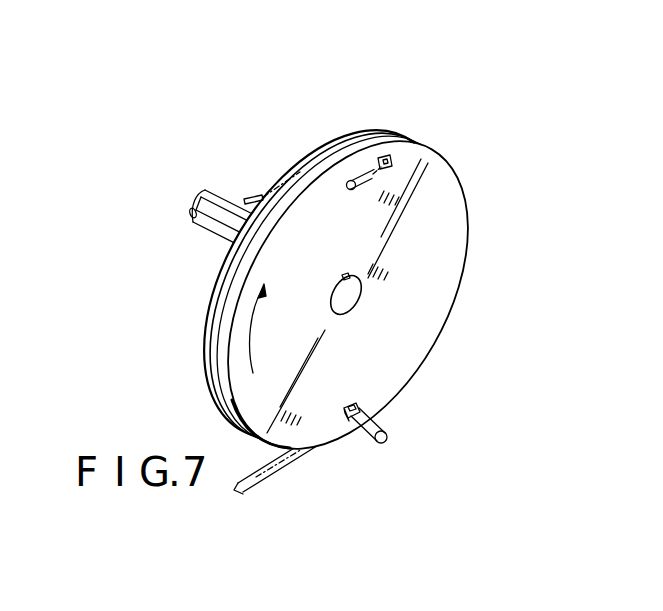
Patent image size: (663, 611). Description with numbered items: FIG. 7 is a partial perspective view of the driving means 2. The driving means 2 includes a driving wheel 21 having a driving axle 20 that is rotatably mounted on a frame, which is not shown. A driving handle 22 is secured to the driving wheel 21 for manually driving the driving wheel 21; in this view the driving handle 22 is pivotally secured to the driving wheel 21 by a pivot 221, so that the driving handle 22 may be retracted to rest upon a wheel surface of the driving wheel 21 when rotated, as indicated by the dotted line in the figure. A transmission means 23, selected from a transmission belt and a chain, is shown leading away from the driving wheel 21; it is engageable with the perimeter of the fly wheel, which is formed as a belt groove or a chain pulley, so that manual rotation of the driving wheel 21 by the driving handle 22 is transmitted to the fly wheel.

The driving means 2 is at (456, 297).
The driving axle 20 is at (223, 196).
The driving wheel 21 is at (445, 228).
The driving handle 22 is at (352, 182).
The pivot 221 is at (361, 406).
The transmission means 23 is at (258, 195).